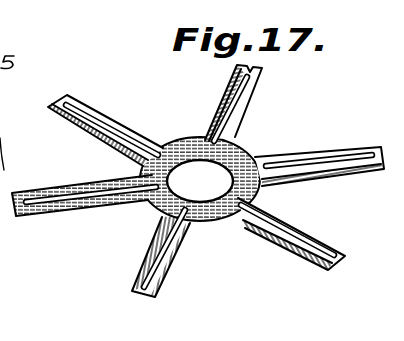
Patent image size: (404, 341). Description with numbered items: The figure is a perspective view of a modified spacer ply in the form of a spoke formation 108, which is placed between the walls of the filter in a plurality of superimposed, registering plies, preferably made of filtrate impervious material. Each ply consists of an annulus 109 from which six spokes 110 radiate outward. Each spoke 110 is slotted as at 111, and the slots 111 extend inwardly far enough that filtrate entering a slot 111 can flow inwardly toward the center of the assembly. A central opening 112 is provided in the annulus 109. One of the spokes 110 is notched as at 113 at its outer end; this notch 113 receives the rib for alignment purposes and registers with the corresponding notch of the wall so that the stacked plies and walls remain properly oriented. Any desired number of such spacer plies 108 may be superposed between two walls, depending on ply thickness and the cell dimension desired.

The spoke formation 108 is at (272, 117).
The annulus 109 is at (223, 222).
The spoke 110 is at (290, 245).
The slot 111 is at (289, 227).
The central opening 112 is at (177, 192).
The notch 113 is at (256, 66).